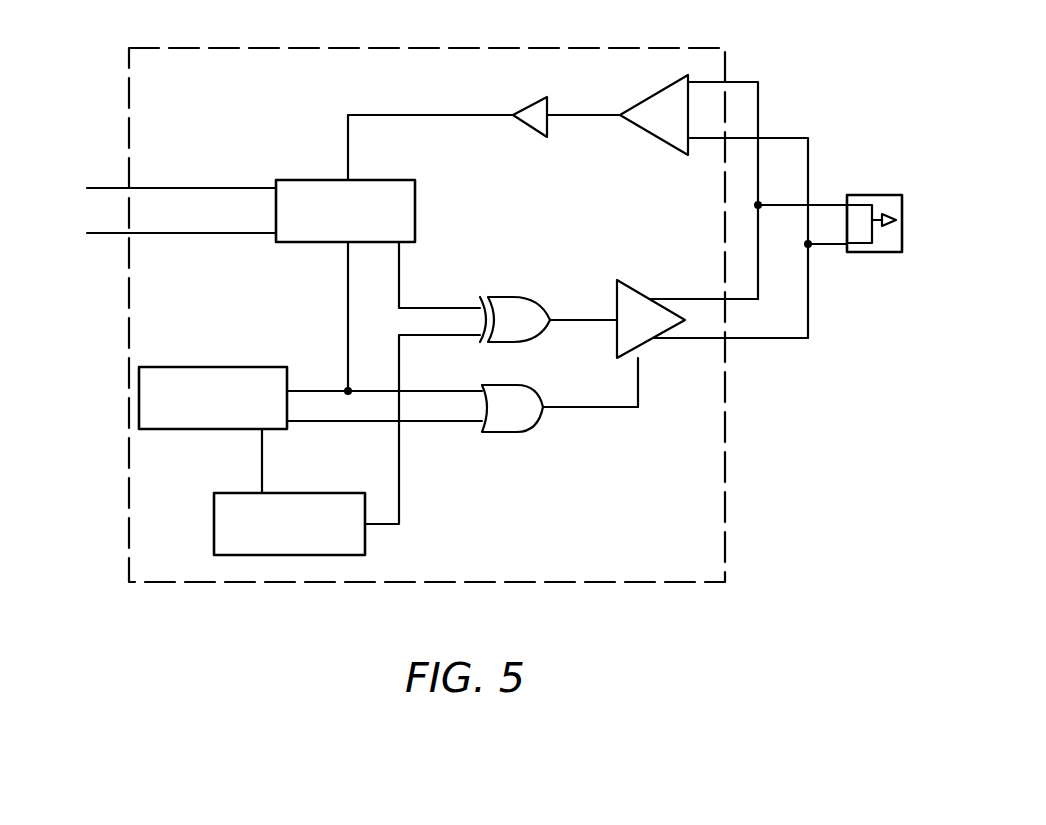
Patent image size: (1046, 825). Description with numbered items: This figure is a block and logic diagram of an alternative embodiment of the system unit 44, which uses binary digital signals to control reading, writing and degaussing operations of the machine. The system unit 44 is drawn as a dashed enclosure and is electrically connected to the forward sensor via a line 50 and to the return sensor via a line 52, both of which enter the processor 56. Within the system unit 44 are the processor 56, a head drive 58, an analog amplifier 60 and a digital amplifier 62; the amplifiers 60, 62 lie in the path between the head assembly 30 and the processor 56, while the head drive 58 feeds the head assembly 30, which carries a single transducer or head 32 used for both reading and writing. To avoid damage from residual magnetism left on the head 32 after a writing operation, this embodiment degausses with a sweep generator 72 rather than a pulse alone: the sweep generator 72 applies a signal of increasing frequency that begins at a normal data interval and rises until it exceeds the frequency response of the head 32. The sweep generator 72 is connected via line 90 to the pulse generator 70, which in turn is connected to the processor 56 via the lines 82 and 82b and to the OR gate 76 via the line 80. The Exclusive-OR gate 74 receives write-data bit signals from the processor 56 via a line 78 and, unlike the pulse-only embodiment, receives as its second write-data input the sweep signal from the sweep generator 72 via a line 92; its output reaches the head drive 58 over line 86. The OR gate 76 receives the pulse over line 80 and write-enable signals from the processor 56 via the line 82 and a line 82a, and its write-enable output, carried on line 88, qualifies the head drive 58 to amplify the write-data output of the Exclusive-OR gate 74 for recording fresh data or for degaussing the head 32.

The system unit 44 is at (532, 48).
The line 52 is at (197, 188).
The line 50 is at (210, 235).
The processor 56 is at (415, 211).
The digital amplifier 62 is at (535, 128).
The analog amplifier 60 is at (645, 128).
The head assembly 30 is at (880, 252).
The transducer (head) 32 is at (885, 212).
The head drive 58 is at (640, 297).
The line 78 is at (430, 308).
The Exclusive-OR gate 74 is at (515, 300).
The XOR gate output line 86 is at (575, 318).
The line 92 is at (437, 336).
The line 82 is at (348, 325).
The line 82b is at (318, 391).
The line 82a is at (437, 393).
The line 80 is at (335, 424).
The pulse generator 70 is at (200, 430).
The line 90 is at (262, 462).
The OR gate 76 is at (515, 423).
The OR gate output line 88 is at (575, 408).
The sweep generator 72 is at (352, 558).